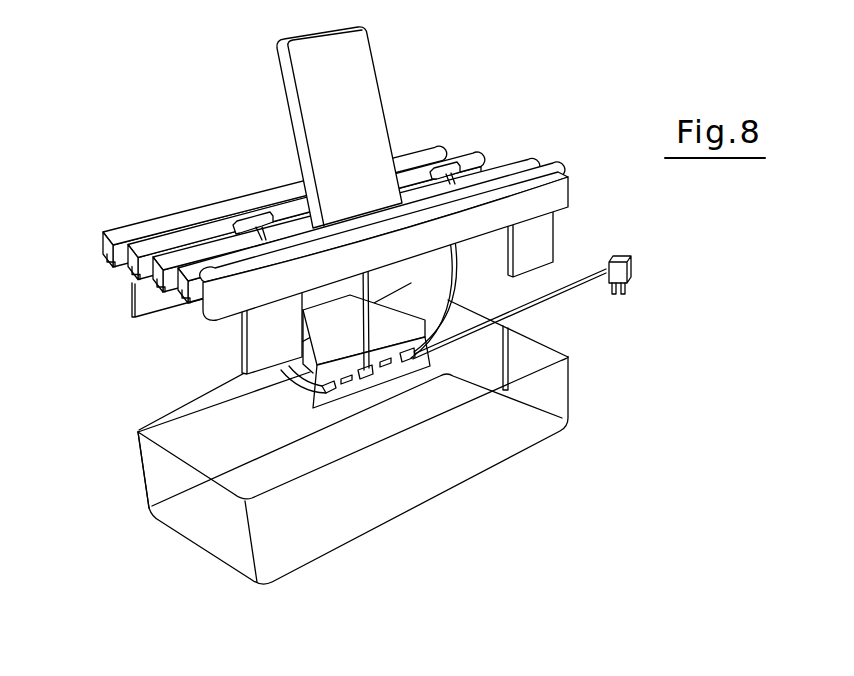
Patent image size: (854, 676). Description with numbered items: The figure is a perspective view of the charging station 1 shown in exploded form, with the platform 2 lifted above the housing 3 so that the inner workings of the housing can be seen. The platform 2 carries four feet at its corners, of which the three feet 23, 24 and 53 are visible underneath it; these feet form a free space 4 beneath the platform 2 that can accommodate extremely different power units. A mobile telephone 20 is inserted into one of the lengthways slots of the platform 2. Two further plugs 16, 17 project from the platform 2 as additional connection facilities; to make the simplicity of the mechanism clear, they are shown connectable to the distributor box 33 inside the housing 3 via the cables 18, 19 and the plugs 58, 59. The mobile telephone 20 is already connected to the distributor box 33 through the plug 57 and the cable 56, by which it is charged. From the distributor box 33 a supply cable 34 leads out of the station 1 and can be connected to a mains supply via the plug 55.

The station 1 is at (378, 342).
The platform 2 is at (555, 193).
The housing 3 is at (447, 472).
The free space 4 is at (178, 327).
The plug 16 is at (240, 220).
The plug 17 is at (455, 167).
The cable 18 is at (288, 385).
The cable 19 is at (512, 333).
The mobile telephone 20 is at (313, 58).
The foot 23 is at (136, 434).
The foot 24 is at (543, 240).
The distributor box 33 is at (338, 395).
The supply cable 34 is at (577, 283).
The foot 53 is at (145, 298).
The plug 55 is at (628, 268).
The cable 56 is at (371, 376).
The plug 57 is at (362, 374).
The plug 58 is at (412, 360).
The plug 59 is at (327, 391).